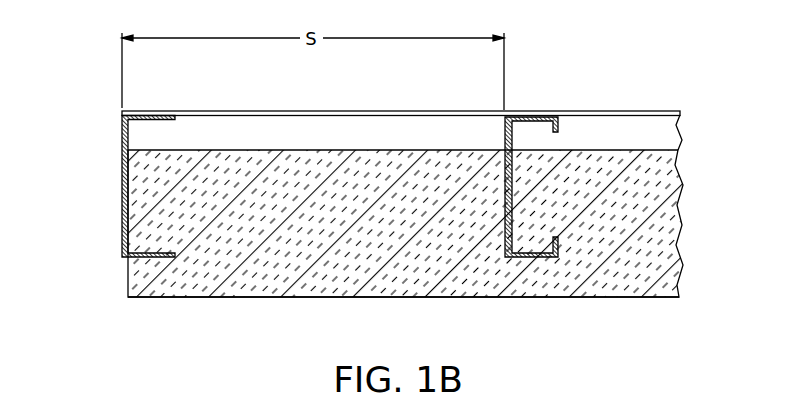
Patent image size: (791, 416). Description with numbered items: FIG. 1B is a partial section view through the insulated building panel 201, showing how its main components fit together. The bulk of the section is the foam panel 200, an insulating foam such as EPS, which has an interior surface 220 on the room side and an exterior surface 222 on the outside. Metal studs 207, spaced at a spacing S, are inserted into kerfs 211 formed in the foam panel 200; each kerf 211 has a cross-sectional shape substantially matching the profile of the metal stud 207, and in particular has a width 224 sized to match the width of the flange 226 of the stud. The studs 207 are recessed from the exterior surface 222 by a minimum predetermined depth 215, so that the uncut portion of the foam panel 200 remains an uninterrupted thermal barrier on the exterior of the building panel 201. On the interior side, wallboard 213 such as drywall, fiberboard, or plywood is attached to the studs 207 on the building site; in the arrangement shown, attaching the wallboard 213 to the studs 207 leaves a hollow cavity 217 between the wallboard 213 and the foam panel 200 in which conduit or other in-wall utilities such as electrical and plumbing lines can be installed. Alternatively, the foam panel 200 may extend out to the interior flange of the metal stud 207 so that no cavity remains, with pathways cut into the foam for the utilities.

The foam panel 200 is at (262, 258).
The insulated building panel 201 is at (358, 250).
The metal stud 207 is at (122, 172).
The kerf 211 is at (540, 258).
The wallboard 213 is at (622, 108).
The predetermined depth 215 is at (117, 258).
The hollow cavity 217 is at (454, 133).
The interior surface 220 is at (640, 150).
The exterior surface 222 is at (640, 297).
The width 224 is at (520, 258).
The flange 226 is at (155, 252).